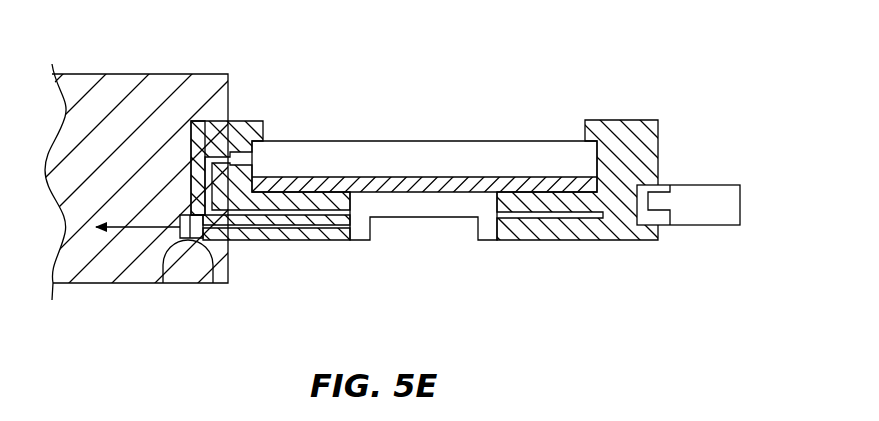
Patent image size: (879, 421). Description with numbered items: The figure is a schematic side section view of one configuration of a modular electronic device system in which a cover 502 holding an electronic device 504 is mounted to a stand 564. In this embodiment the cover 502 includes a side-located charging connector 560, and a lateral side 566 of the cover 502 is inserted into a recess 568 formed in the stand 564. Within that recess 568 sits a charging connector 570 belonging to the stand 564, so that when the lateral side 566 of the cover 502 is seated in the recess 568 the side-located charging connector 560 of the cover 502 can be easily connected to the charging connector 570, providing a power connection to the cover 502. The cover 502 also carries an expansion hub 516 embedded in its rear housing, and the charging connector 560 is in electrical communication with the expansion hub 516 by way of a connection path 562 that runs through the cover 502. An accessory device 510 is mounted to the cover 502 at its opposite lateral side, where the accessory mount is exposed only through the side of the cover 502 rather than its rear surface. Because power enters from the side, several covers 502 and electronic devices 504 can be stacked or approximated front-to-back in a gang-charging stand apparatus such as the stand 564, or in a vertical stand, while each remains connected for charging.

The cover 502 is at (609, 116).
The electronic device 504 is at (367, 138).
The first accessory device 510 is at (711, 181).
The expansion hub 516 is at (360, 241).
The charging connector 560 is at (213, 283).
The connection path 562 is at (287, 241).
The stand 564 is at (166, 66).
The lateral side 566 is at (192, 133).
The recess 568 is at (236, 122).
The charging connector 570 is at (162, 283).